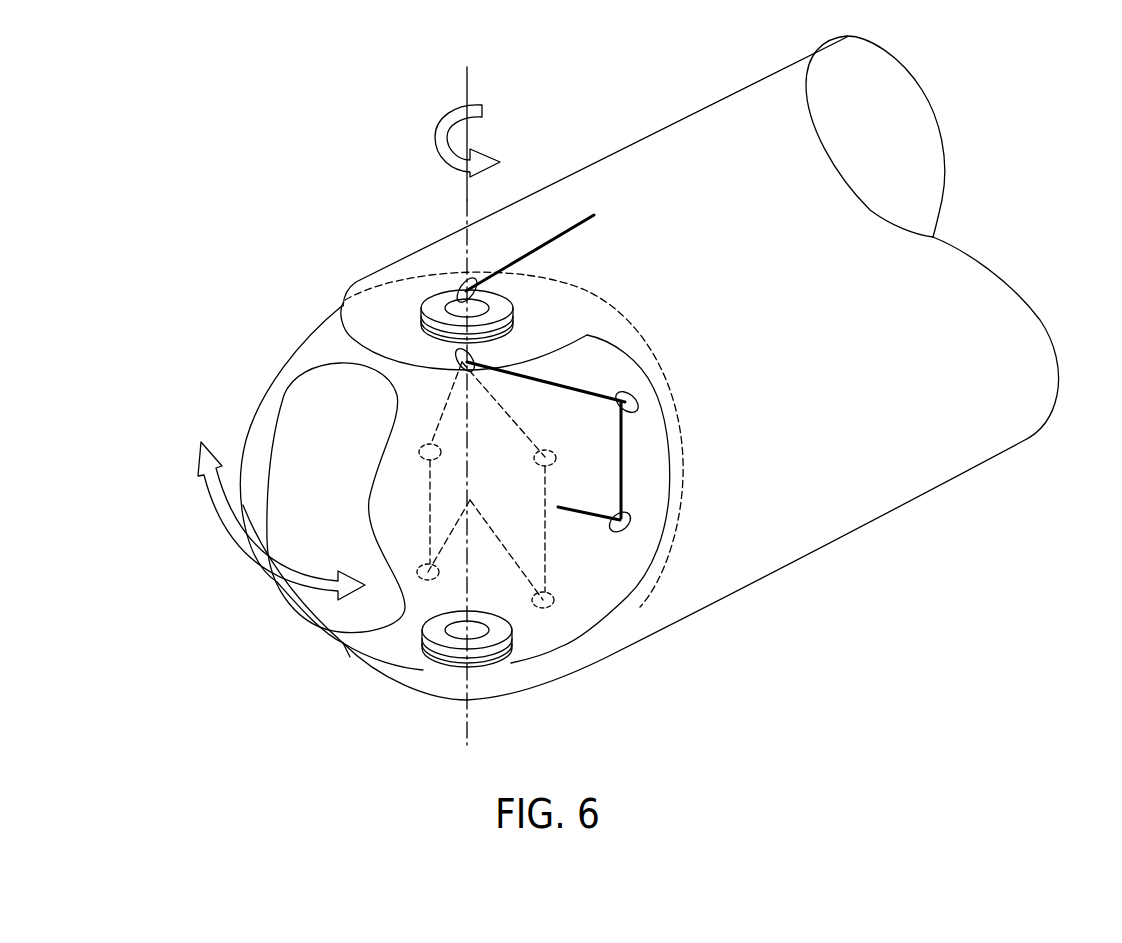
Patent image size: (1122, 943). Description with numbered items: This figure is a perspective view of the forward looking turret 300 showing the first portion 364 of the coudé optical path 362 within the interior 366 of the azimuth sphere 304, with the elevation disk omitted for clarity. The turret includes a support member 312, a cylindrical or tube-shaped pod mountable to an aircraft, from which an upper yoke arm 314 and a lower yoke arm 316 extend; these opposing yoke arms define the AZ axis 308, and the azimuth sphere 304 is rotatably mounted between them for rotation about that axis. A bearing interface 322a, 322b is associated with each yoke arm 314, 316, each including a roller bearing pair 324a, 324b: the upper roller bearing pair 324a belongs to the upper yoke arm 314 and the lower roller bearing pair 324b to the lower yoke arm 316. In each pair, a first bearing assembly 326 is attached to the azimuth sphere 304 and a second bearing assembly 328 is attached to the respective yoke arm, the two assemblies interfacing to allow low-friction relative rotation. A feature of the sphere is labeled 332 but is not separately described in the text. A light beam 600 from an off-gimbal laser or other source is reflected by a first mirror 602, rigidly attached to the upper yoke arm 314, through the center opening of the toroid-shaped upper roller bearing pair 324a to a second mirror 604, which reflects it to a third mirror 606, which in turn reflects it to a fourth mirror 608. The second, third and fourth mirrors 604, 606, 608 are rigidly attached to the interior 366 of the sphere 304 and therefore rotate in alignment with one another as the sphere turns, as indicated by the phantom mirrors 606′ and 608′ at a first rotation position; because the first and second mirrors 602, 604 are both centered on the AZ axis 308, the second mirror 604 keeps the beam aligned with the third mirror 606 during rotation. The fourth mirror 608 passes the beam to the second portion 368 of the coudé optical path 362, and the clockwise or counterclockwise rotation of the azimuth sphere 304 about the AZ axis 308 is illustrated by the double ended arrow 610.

The forward looking turret 300 is at (308, 188).
The azimuth sphere 304 is at (268, 372).
The AZ axis 308 is at (465, 92).
The support member 312 is at (655, 130).
The upper yoke arm 314 is at (343, 318).
The lower yoke arm 316 is at (495, 697).
The bearing interface 322a is at (410, 313).
The bearing interface 322b is at (415, 648).
The upper roller bearing pair 324a is at (520, 314).
The lower roller bearing pair 324b is at (519, 652).
The first bearing assembly 326 is at (514, 316).
The second bearing assembly 328 is at (508, 296).
The housing edge 332 is at (298, 590).
The coudé optical path 362 is at (623, 453).
The first portion of the coudé optical path 364 is at (634, 483).
The interior of the azimuth sphere 366 is at (535, 507).
The second portion of the coudé optical path 368 is at (588, 509).
The light beam 600 is at (590, 226).
The first mirror 602 is at (458, 280).
The second mirror 604 is at (456, 360).
The third mirror 606 is at (638, 402).
The third mirror at first rotation position 606′ is at (548, 450).
The fourth mirror 608 is at (614, 533).
The fourth mirror at first rotation position 608′ is at (554, 617).
The double ended arrow 610 is at (232, 528).